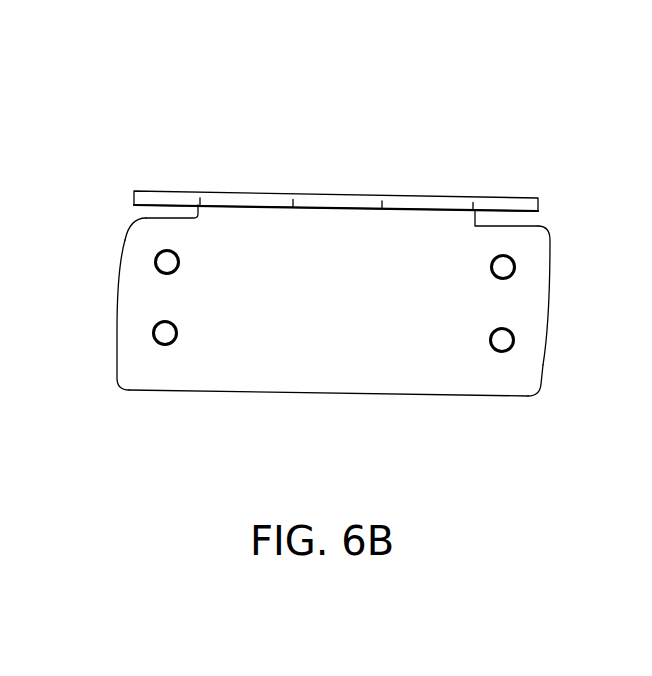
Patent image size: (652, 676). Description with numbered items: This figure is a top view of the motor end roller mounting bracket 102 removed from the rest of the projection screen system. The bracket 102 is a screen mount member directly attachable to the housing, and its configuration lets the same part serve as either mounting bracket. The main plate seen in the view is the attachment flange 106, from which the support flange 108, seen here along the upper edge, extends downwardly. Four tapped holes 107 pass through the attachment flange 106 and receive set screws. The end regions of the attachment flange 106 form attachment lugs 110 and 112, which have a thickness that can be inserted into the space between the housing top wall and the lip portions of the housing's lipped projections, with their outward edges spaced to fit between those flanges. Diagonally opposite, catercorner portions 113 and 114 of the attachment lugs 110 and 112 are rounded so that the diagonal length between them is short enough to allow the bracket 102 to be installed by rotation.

The screen mount bracket 102 is at (584, 154).
The attachment flange 106 is at (292, 362).
The tapped holes 107 is at (492, 330).
The support flange 108 is at (167, 192).
The attachment lug 110 is at (538, 292).
The attachment lug 112 is at (135, 303).
The rounded portion 113 is at (540, 373).
The rounded portion 114 is at (130, 235).